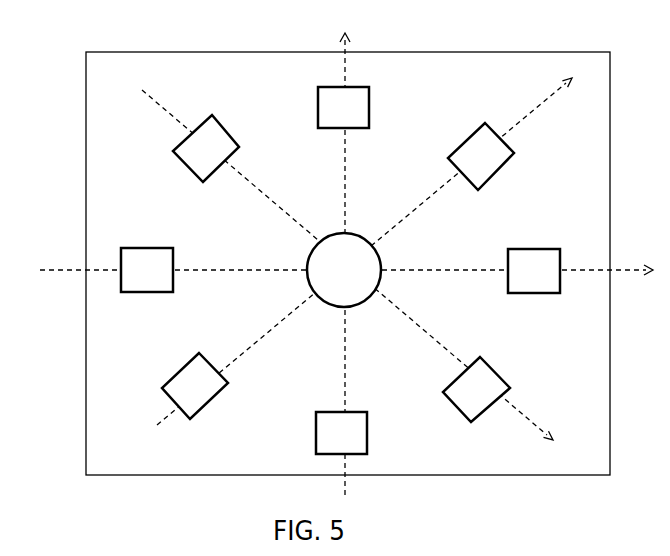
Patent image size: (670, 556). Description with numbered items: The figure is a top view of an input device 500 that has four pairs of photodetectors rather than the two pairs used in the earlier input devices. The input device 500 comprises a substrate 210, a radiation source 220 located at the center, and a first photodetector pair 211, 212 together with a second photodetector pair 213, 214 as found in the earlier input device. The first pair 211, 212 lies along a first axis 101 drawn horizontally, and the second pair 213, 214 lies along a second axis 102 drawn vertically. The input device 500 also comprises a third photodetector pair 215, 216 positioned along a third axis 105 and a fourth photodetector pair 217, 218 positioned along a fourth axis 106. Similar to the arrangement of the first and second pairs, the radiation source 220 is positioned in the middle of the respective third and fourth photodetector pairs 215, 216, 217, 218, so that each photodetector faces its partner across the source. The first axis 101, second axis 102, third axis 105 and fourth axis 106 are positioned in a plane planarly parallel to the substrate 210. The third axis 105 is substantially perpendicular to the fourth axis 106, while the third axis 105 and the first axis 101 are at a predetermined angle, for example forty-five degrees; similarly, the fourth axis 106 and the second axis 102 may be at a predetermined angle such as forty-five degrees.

The input device 500 is at (51, 65).
The substrate 210 is at (149, 450).
The first axis 101 is at (600, 270).
The second axis 102 is at (349, 36).
The third axis 105 is at (531, 117).
The fourth axis 106 is at (518, 410).
The radiation source 220 is at (331, 278).
The photodetector of first photodetector pair 211 is at (134, 278).
The photodetector of first photodetector pair 212 is at (521, 278).
The photodetector of second photodetector pair 213 is at (328, 441).
The photodetector of second photodetector pair 214 is at (330, 115).
The photodetector of third photodetector pair 215 is at (182, 395).
The photodetector of third photodetector pair 216 is at (468, 165).
The photodetector of fourth photodetector pair 217 is at (463, 398).
The photodetector of fourth photodetector pair 218 is at (193, 158).